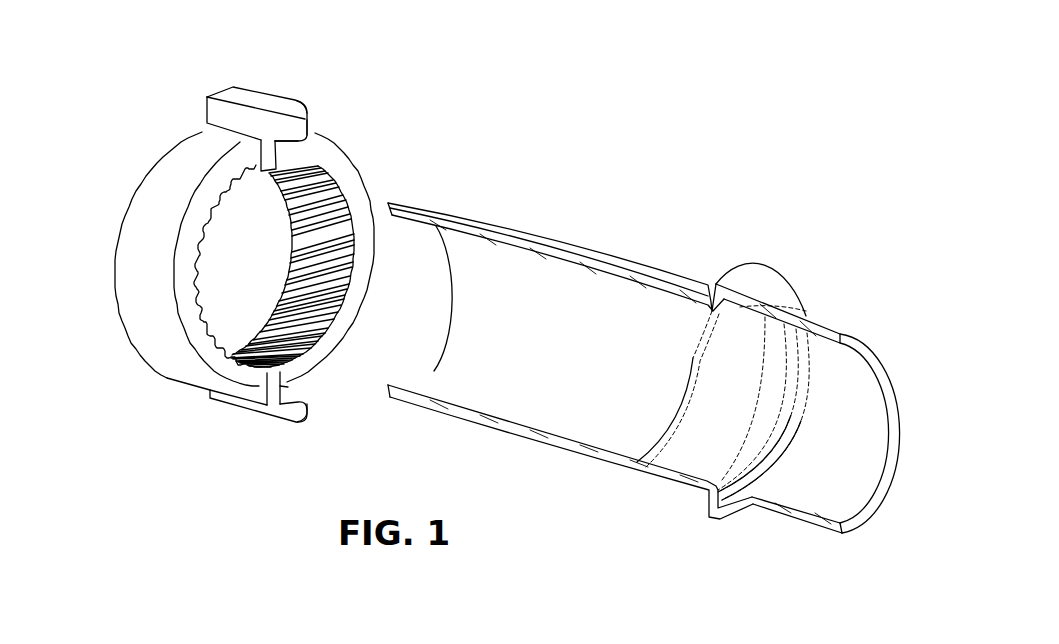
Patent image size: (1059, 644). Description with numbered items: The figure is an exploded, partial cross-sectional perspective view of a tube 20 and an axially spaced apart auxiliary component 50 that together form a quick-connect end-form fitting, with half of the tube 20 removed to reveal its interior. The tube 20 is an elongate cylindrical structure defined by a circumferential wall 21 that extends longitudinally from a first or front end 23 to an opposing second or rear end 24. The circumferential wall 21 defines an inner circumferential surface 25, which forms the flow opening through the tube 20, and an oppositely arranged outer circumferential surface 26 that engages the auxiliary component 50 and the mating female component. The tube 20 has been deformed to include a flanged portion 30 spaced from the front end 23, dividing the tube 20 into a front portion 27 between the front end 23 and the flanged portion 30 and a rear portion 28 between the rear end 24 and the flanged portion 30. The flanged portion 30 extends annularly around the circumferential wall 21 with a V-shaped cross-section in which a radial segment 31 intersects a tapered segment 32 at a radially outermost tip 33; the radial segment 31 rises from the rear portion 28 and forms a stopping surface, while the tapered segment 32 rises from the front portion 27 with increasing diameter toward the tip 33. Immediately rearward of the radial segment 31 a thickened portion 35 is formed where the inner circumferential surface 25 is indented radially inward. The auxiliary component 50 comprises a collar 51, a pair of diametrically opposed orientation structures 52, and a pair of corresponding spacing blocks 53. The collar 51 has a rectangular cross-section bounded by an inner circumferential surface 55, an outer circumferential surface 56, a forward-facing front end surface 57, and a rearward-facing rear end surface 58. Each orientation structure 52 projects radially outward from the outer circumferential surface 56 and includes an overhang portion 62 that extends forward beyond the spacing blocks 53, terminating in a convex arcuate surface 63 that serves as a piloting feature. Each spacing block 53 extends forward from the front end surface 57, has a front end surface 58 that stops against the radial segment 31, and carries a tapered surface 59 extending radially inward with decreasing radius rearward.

The tube 20 is at (851, 293).
The circumferential wall 21 is at (490, 226).
The first end 23 is at (900, 360).
The second end 24 is at (450, 288).
The inner circumferential surface 25 is at (427, 380).
The outer circumferential surface 26 is at (573, 248).
The front portion 27 is at (781, 534).
The rear portion 28 is at (546, 461).
The flanged portion 30 is at (738, 254).
The radial segment 31 is at (705, 283).
The tapered segment 32 is at (737, 292).
The tip 33 is at (715, 270).
The thickened portion 35 is at (672, 297).
The auxiliary component 50 is at (360, 62).
The collar 51 is at (356, 146).
The orientation structures 52 is at (258, 82).
The spacing blocks 53 is at (250, 150).
The inner circumferential surface 55 is at (392, 289).
The outer circumferential surface 56 is at (155, 212).
The front end surface 57 is at (351, 178).
The rear end surface 58 is at (300, 141).
The tapered surface 59 is at (281, 176).
The overhang portion 62 is at (293, 110).
The arcuate surface 63 is at (305, 127).